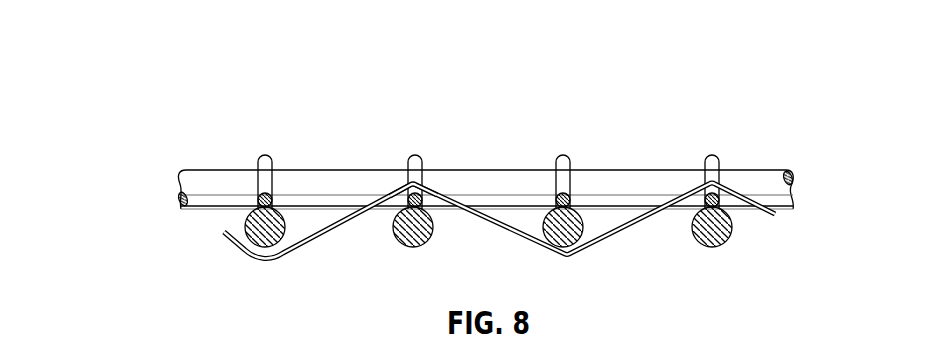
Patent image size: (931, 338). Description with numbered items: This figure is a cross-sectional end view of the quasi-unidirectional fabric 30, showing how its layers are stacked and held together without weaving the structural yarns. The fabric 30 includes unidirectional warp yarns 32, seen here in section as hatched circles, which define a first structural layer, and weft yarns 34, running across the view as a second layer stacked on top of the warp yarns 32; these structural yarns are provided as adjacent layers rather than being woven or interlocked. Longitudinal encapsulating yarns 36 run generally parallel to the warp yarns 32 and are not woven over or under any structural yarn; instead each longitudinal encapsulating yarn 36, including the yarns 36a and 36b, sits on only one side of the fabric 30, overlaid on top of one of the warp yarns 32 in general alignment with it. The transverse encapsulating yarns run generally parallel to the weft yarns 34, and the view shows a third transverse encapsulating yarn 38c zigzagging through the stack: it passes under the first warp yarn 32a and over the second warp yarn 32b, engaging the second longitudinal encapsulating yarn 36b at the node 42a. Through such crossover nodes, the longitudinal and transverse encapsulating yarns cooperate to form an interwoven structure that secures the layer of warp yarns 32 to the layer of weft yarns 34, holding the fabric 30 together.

The quasi-unidirectional fabric 30 is at (311, 43).
The warp yarns 32 is at (279, 245).
The first warp yarn 32a is at (578, 245).
The second warp yarn 32b is at (427, 243).
The weft yarns 34 is at (767, 178).
The longitudinal encapsulating yarns 36 is at (271, 159).
The longitudinal encapsulating yarn 36a is at (569, 158).
The second longitudinal encapsulating yarn 36b is at (422, 158).
The third transverse encapsulating yarn 38c is at (638, 223).
The node 42a is at (402, 172).